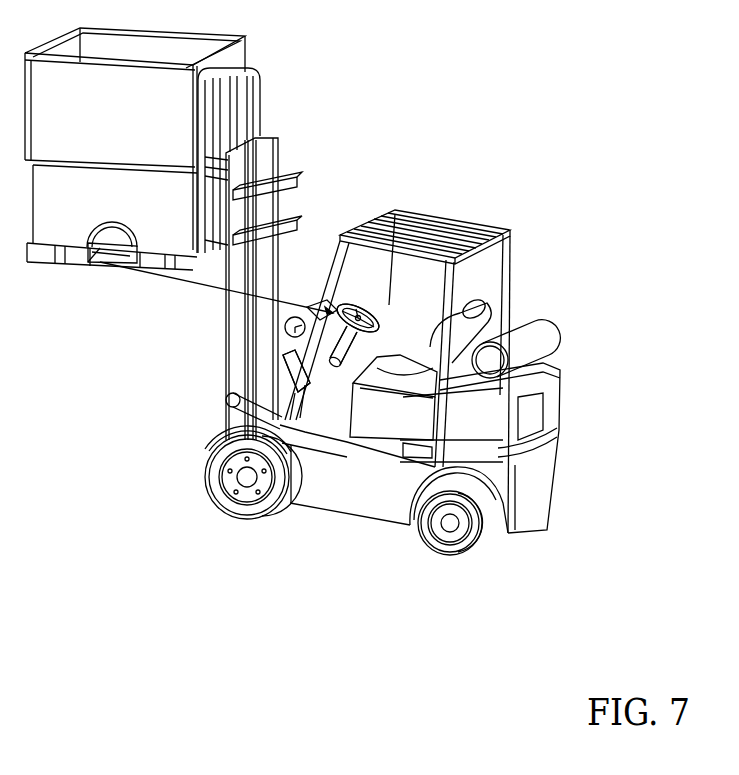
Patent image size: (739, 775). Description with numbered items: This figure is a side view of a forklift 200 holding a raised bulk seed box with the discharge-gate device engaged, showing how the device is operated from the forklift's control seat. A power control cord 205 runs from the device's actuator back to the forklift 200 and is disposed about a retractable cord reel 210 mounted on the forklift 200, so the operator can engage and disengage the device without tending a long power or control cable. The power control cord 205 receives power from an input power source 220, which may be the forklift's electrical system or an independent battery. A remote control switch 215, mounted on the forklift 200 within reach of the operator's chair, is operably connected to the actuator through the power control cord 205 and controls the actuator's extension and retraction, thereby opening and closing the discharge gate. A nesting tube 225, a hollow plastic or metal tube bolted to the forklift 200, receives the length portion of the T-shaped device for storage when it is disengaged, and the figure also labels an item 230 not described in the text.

The forklift 200 is at (330, 311).
The power control cord 205 is at (135, 189).
The retractable cord reel 210 is at (336, 230).
The remote control switch 215 is at (460, 259).
The input power source 220 is at (467, 301).
The nesting tube 225 is at (200, 365).
The transceiver 230 is at (200, 373).